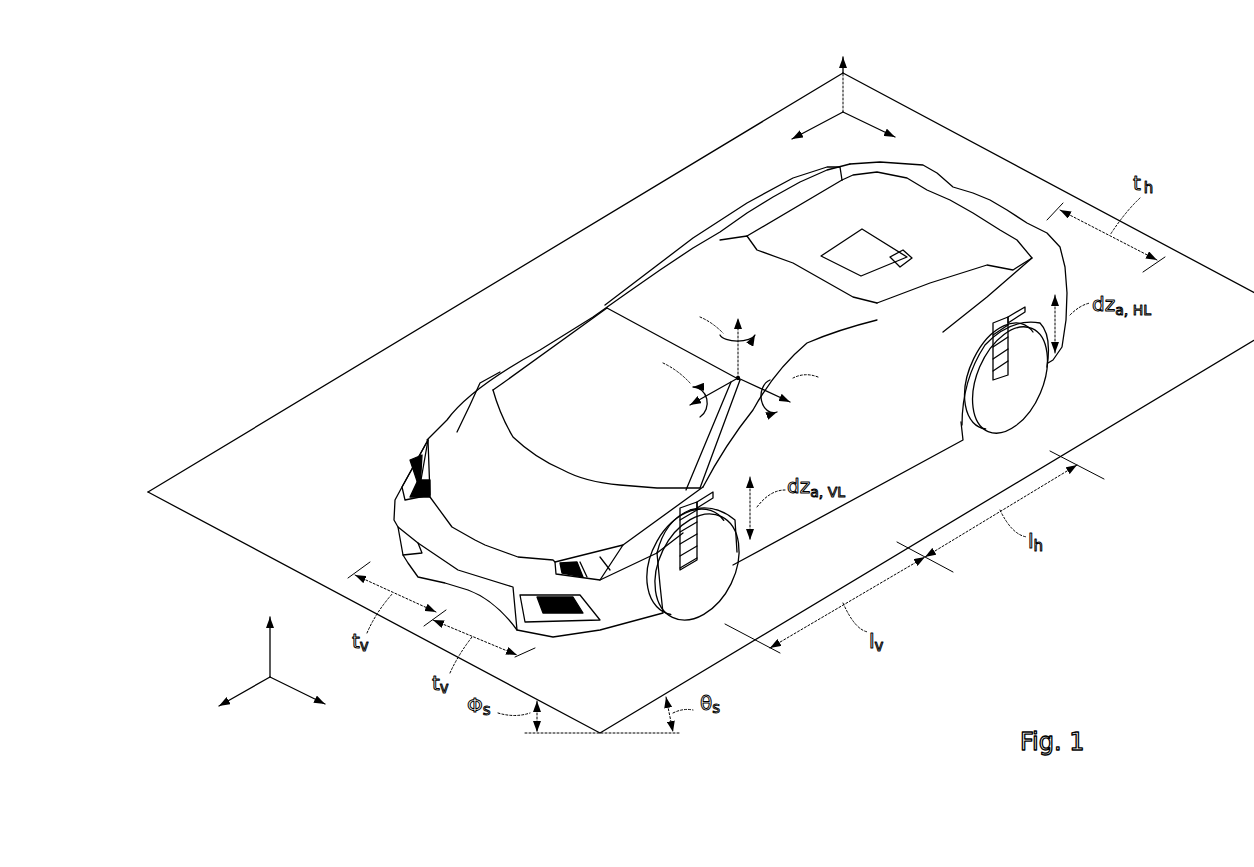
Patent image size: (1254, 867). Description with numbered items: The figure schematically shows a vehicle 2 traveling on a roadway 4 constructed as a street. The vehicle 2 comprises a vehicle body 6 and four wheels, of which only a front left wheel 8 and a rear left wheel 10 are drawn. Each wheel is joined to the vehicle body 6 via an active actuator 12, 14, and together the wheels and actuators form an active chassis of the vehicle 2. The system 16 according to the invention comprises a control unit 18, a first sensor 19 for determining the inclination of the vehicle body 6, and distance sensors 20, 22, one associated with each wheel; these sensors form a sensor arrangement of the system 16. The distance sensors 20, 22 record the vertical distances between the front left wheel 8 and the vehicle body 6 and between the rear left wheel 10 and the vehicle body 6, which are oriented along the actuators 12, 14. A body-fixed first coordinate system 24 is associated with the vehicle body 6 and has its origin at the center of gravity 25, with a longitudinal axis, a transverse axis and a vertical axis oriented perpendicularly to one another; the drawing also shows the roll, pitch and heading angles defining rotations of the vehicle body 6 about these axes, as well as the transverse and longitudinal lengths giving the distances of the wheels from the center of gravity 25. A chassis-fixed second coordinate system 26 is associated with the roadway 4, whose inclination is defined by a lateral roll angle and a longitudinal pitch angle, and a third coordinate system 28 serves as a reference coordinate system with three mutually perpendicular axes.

The vehicle 2 is at (657, 268).
The roadway 4 is at (535, 258).
The vehicle body 6 is at (725, 253).
The front left wheel 8 is at (690, 600).
The rear left wheel 10 is at (1005, 410).
The active actuator 12 is at (700, 553).
The active actuator 14 is at (1013, 367).
The system 16 is at (987, 172).
The control unit 18 is at (872, 247).
The first sensor 19 is at (900, 262).
The distance sensor 20 is at (717, 493).
The distance sensor 22 is at (1020, 307).
The first coordinate system 24 is at (717, 360).
The center of gravity 25 is at (750, 373).
The second coordinate system 26 is at (829, 104).
The third coordinate system 28 is at (252, 660).